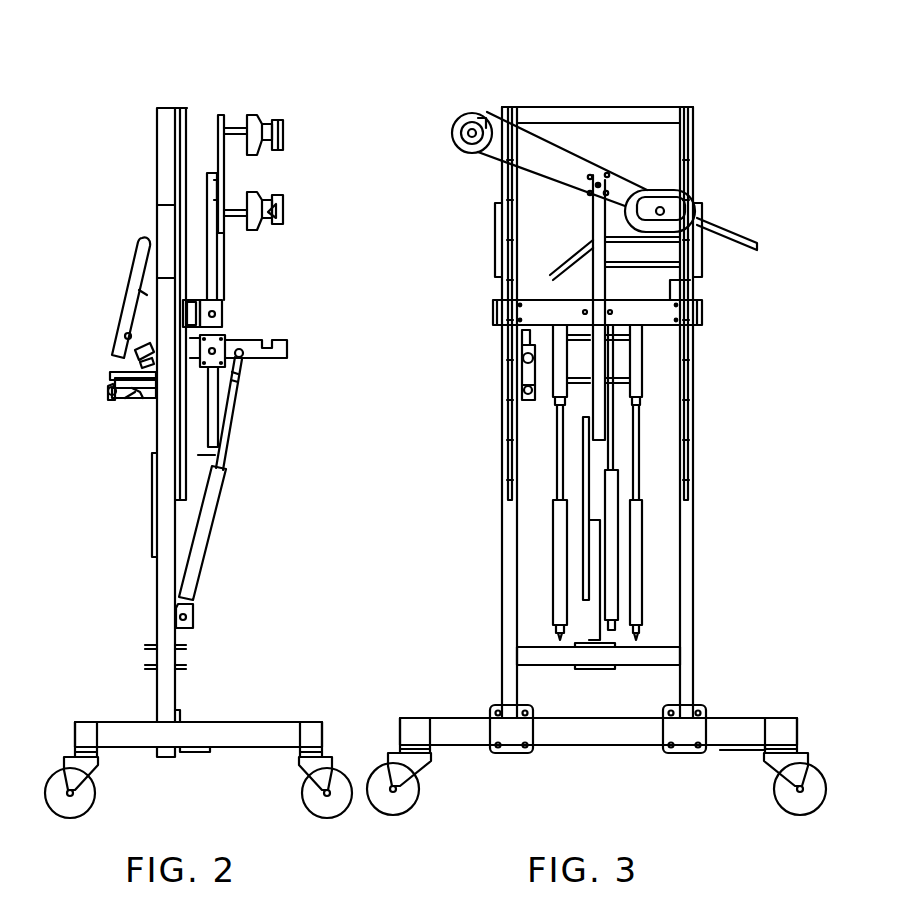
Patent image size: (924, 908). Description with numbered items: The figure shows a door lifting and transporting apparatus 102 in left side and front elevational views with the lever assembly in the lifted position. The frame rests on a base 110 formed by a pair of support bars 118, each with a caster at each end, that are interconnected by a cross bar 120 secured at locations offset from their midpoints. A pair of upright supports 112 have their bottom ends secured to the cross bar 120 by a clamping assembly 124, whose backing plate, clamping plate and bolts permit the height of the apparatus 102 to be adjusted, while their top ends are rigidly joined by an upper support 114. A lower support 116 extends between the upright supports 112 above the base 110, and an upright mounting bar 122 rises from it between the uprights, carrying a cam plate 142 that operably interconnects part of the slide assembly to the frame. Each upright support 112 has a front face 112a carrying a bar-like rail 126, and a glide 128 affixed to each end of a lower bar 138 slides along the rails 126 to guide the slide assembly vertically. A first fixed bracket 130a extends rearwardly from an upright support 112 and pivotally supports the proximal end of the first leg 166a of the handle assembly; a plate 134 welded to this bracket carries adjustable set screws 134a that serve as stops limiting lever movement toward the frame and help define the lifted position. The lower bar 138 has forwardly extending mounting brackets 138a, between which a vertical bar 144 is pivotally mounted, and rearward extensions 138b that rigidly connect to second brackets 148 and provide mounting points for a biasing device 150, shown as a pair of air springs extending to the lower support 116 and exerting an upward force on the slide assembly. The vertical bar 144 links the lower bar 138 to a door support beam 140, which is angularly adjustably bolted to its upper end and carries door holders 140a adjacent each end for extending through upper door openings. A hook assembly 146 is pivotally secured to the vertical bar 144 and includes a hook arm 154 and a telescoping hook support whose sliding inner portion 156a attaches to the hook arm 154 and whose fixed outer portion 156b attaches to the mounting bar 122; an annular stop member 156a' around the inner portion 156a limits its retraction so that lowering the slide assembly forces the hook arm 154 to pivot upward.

In FIG. 2, the door lifting and transporting apparatus 102 is at (132, 88).
In FIG. 3, the door lifting and transporting apparatus 102 is at (627, 90).
In FIG. 2, the base 110 is at (270, 695).
In FIG. 3, the base 110 is at (740, 685).
In FIG. 2, the upright supports 112 is at (157, 598).
In FIG. 3, the upright supports 112 is at (695, 596).
In FIG. 3, the front face 112a is at (508, 588).
In FIG. 3, the upper support 114 is at (623, 107).
In FIG. 3, the lower support 116 is at (660, 650).
In FIG. 2, the support bars 118 is at (245, 748).
In FIG. 3, the support bars 118 is at (414, 718).
In FIG. 3, the cross bar 120 is at (580, 740).
In FIG. 3, the upright mounting bar 122 is at (580, 640).
In FIG. 3, the clamping assembly 124 is at (505, 764).
In FIG. 2, the rail 126 is at (188, 115).
In FIG. 3, the rail 126 is at (508, 480).
In FIG. 2, the glide 128 is at (142, 300).
In FIG. 2, the first fixed bracket 130a is at (122, 373).
In FIG. 2, the plate 134 is at (137, 365).
In FIG. 3, the plate 134 is at (525, 374).
In FIG. 2, the set screws 134a is at (183, 320).
In FIG. 3, the set screws 134a is at (525, 358).
In FIG. 2, the lower bar 138 is at (195, 300).
In FIG. 3, the lower bar 138 is at (665, 313).
In FIG. 2, the mounting brackets 138a is at (222, 313).
In FIG. 3, the mounting brackets 138a is at (590, 313).
In FIG. 3, the extensions 138b is at (562, 352).
In FIG. 2, the door support beam 140 is at (214, 150).
In FIG. 3, the door support beam 140 is at (547, 150).
In FIG. 2, the door holders 140a is at (282, 122).
In FIG. 3, the door holders 140a is at (466, 124).
In FIG. 2, the cam plate 142 is at (205, 462).
In FIG. 3, the cam plate 142 is at (584, 460).
In FIG. 2, the vertical bar 144 is at (220, 290).
In FIG. 3, the vertical bar 144 is at (596, 222).
In FIG. 2, the hook assembly 146 is at (266, 372).
In FIG. 3, the hook assembly 146 is at (625, 465).
In FIG. 2, the second brackets 148 is at (128, 395).
In FIG. 3, the biasing device 150 is at (555, 546).
In FIG. 2, the hook arm 154 is at (258, 345).
In FIG. 2, the sliding inner portion 156a is at (278, 409).
In FIG. 2, the annular stop member 156a' is at (288, 417).
In FIG. 2, the fixed outer portion 156b is at (198, 566).
In FIG. 3, the fixed outer portion 156b is at (612, 576).
In FIG. 2, the first leg 166a is at (140, 298).